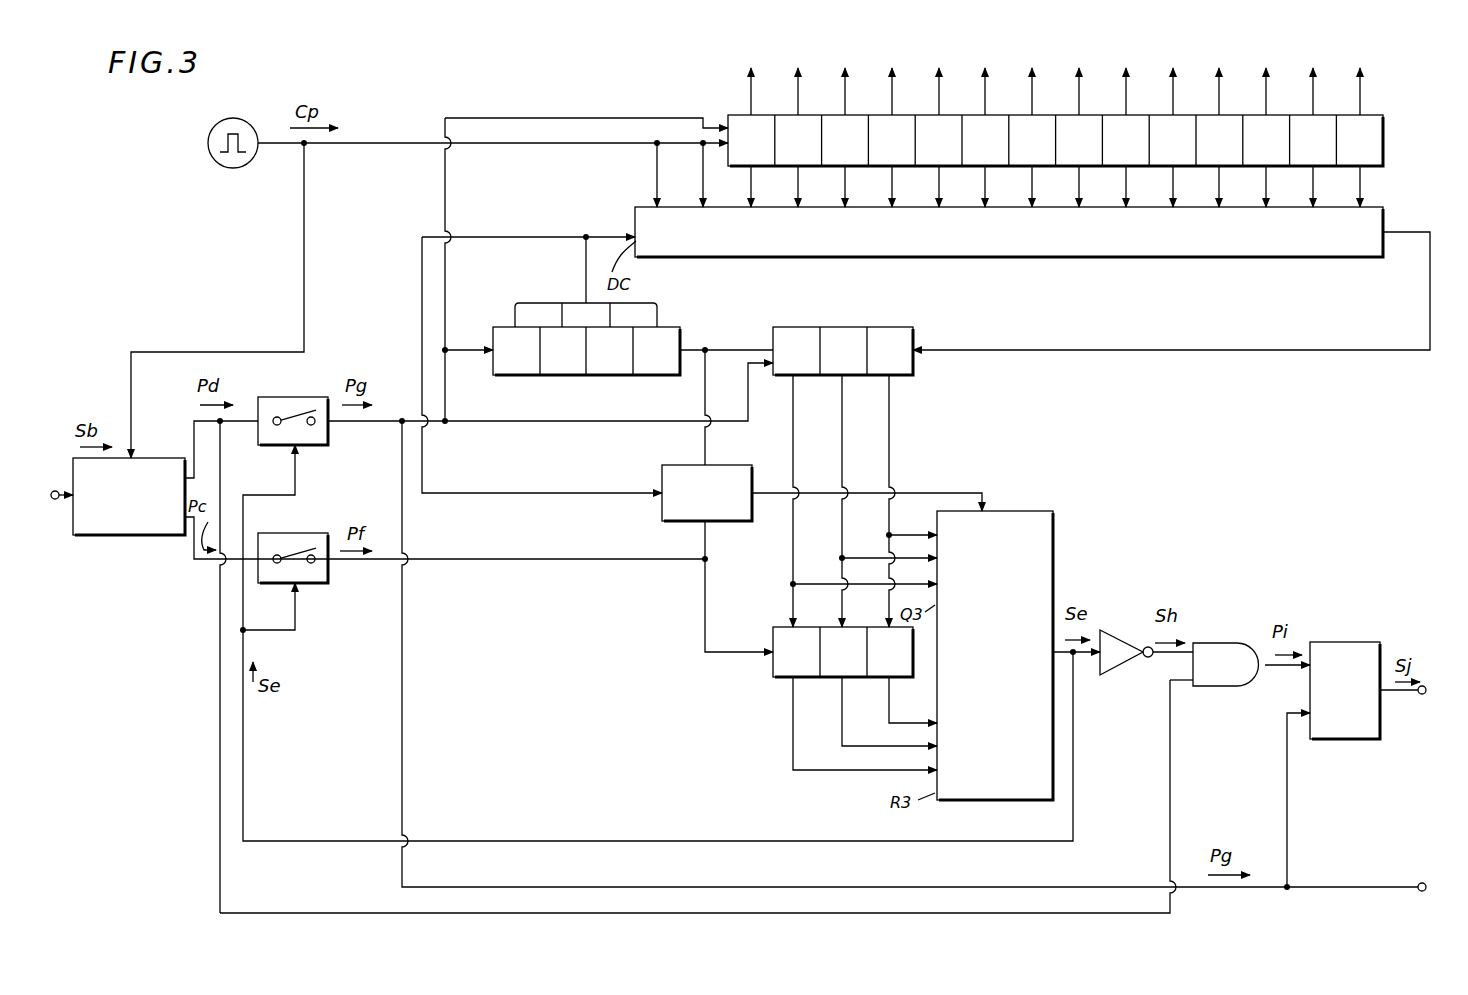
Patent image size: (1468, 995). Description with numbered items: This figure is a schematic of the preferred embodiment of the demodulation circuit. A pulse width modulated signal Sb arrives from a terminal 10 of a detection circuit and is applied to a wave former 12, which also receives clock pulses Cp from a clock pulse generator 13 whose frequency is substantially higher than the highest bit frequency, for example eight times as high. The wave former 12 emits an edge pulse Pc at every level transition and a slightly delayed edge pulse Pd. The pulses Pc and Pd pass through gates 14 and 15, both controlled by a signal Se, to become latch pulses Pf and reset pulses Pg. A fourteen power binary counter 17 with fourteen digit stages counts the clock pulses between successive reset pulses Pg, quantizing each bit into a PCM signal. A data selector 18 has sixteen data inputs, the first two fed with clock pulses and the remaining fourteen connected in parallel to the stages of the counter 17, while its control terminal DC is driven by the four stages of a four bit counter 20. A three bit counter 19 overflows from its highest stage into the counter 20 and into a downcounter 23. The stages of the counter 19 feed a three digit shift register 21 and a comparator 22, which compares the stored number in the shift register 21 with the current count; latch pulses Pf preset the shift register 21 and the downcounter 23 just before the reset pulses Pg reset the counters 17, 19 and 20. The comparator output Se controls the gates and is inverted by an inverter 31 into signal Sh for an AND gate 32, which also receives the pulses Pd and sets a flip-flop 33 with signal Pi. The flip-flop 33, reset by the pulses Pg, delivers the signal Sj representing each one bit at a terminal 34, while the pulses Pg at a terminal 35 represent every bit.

The terminal 10 is at (56, 500).
The wave former 12 is at (138, 538).
The clock pulse generator 13 is at (235, 168).
The gate 14 is at (318, 585).
The gate 15 is at (318, 448).
The fourteen power binary counter 17 is at (1378, 167).
The data selector 18 is at (1297, 258).
The three bit counter 19 is at (905, 378).
The four bit counter 20 is at (630, 378).
The shift register 21 is at (783, 680).
The comparator 22 is at (1003, 802).
The downcounter 23 is at (733, 525).
The inverter 31 is at (1122, 668).
The AND gate 32 is at (1232, 690).
The flip-flop 33 is at (1352, 740).
The terminal 34 is at (1426, 697).
The terminal 35 is at (1424, 882).